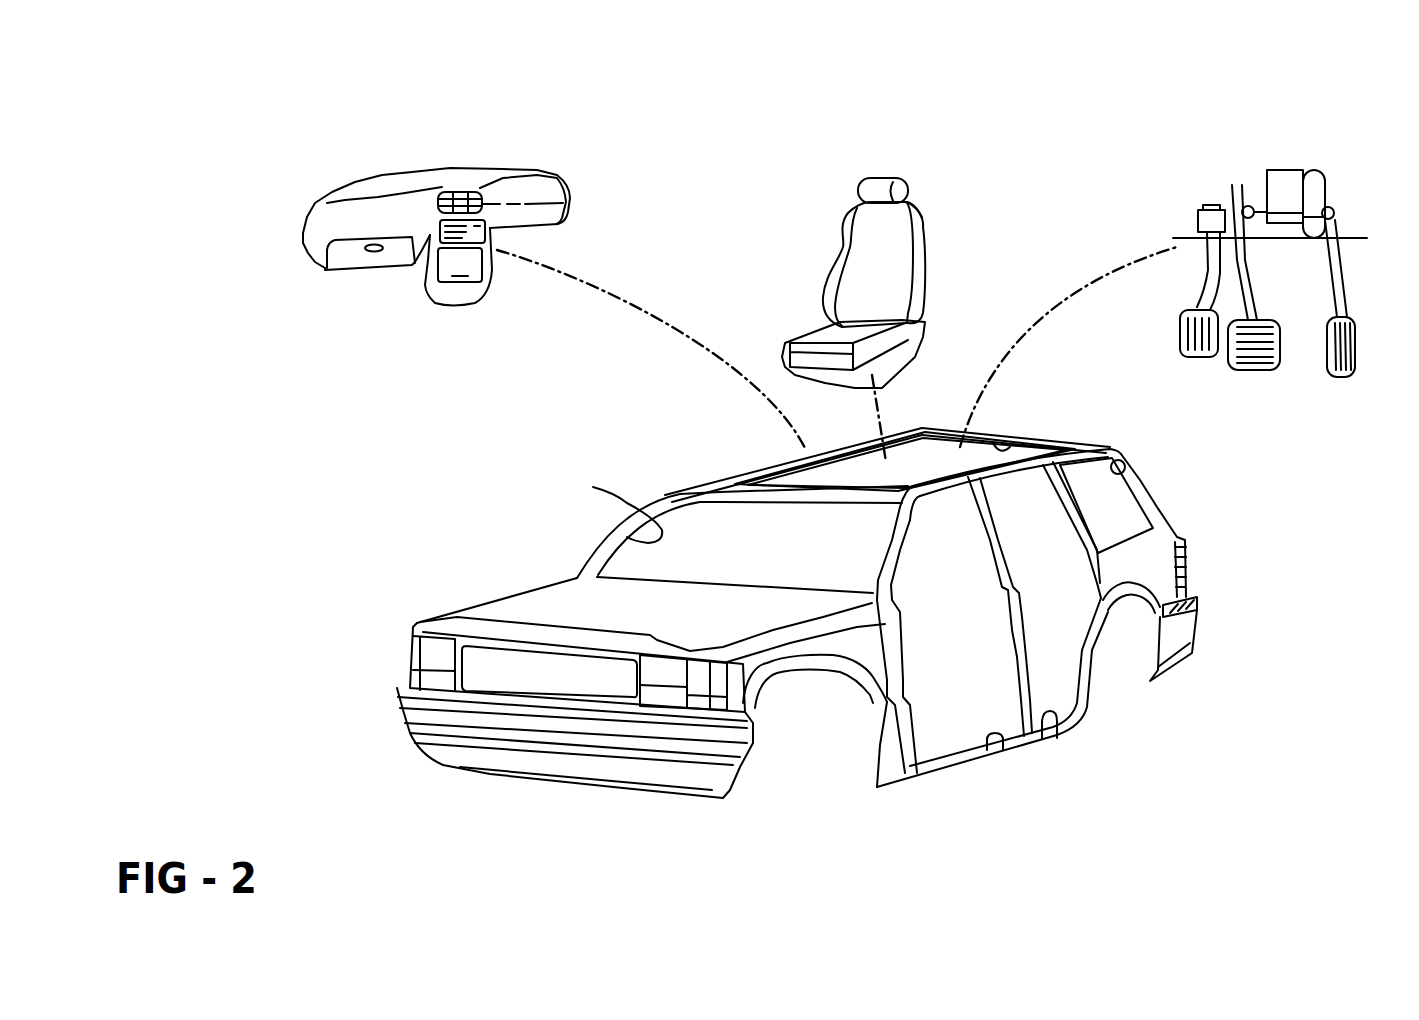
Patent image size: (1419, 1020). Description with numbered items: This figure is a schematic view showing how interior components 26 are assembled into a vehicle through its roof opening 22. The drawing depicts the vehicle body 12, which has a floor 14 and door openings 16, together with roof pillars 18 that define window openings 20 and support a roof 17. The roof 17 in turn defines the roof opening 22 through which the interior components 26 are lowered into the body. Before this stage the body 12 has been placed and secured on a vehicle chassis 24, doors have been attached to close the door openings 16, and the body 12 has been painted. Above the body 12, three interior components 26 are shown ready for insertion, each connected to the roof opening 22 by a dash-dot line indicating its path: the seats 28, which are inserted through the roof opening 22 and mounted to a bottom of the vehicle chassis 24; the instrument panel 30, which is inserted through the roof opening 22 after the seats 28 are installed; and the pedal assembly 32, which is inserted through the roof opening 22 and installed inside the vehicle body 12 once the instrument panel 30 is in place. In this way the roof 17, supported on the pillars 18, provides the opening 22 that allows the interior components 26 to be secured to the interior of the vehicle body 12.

The vehicle body 12 is at (823, 604).
The floor 14 is at (930, 715).
The door openings 16 is at (1047, 720).
The roof 17 is at (753, 473).
The roof pillars 18 is at (880, 567).
The window openings 20 is at (593, 487).
The roof opening 22 is at (1000, 450).
The vehicle chassis 24 is at (926, 778).
The interior components 26 is at (545, 168).
The seats 28 is at (873, 265).
The instrument panel 30 is at (413, 182).
The pedal assembly 32 is at (1281, 207).